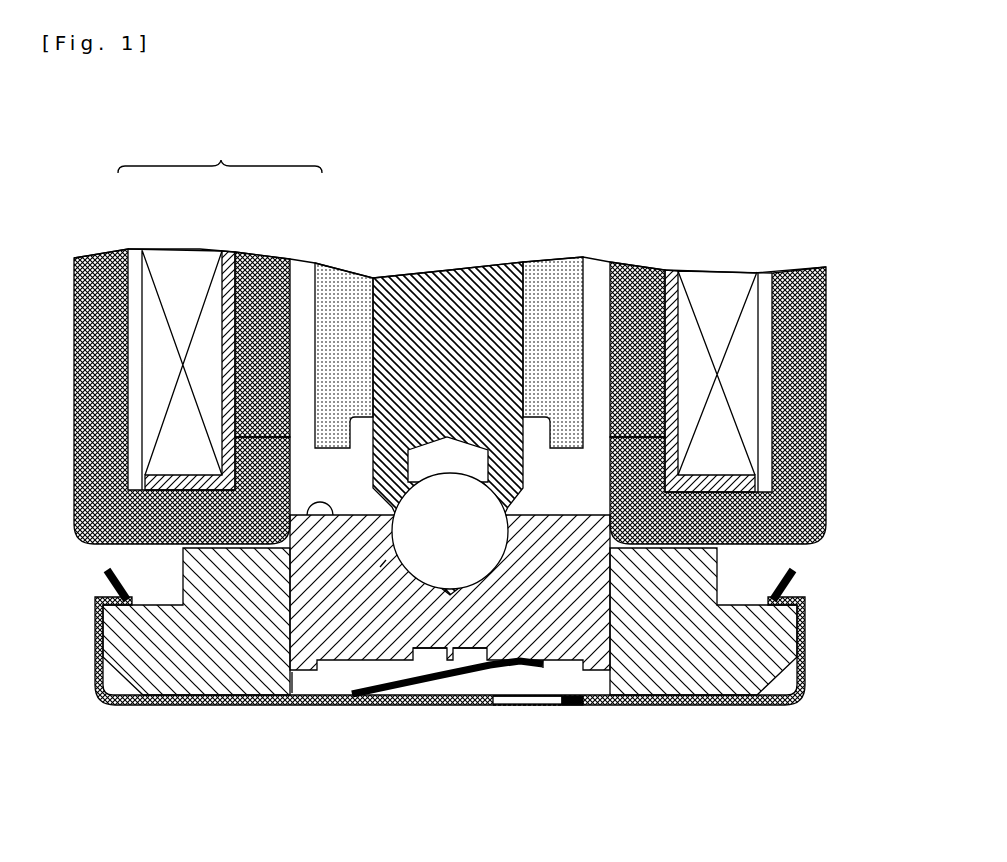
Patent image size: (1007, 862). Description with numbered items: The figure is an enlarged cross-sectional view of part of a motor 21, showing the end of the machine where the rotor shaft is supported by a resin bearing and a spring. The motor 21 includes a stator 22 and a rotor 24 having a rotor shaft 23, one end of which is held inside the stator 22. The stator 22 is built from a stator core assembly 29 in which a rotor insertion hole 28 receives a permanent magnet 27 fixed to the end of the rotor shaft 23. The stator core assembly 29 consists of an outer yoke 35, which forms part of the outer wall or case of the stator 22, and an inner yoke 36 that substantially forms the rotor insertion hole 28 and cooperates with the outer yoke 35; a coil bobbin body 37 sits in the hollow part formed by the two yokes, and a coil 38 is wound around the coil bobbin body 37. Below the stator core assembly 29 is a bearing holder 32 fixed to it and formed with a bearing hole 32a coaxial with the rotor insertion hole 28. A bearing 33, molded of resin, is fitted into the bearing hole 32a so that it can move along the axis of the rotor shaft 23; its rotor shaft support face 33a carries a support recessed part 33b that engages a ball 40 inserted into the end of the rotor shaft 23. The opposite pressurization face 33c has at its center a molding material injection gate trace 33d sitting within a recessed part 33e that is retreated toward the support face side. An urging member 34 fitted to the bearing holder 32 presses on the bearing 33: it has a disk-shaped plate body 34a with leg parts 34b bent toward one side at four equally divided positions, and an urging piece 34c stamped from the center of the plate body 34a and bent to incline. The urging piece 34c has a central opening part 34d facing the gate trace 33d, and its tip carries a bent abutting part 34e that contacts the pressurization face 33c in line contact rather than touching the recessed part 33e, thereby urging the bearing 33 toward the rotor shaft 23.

The motor 21 is at (400, 243).
The stator 22 is at (700, 233).
The rotor shaft 23 is at (455, 268).
The rotor 24 is at (478, 173).
The permanent magnet 27 is at (540, 262).
The rotor insertion hole 28 is at (596, 267).
The stator core assembly 29 is at (220, 156).
The bearing holder 32 is at (221, 697).
The bearing hole 32a is at (305, 696).
The bearing 33 is at (603, 694).
The rotor shaft support face 33a is at (320, 516).
The support recessed part 33b is at (380, 567).
The pressurization face 33c is at (578, 697).
The molding material injection gate trace 33d is at (472, 650).
The recessed part 33e is at (423, 662).
The urging member 34 is at (135, 713).
The plate body 34a is at (725, 706).
The leg part 34b is at (103, 594).
The urging piece 34c is at (500, 663).
The opening part 34d is at (432, 673).
The abutting part 34e is at (560, 705).
The outer yoke 35 is at (100, 262).
The inner yoke 36 is at (280, 262).
The coil bobbin body 37 is at (228, 262).
The coil 38 is at (160, 262).
The ball 40 is at (424, 565).